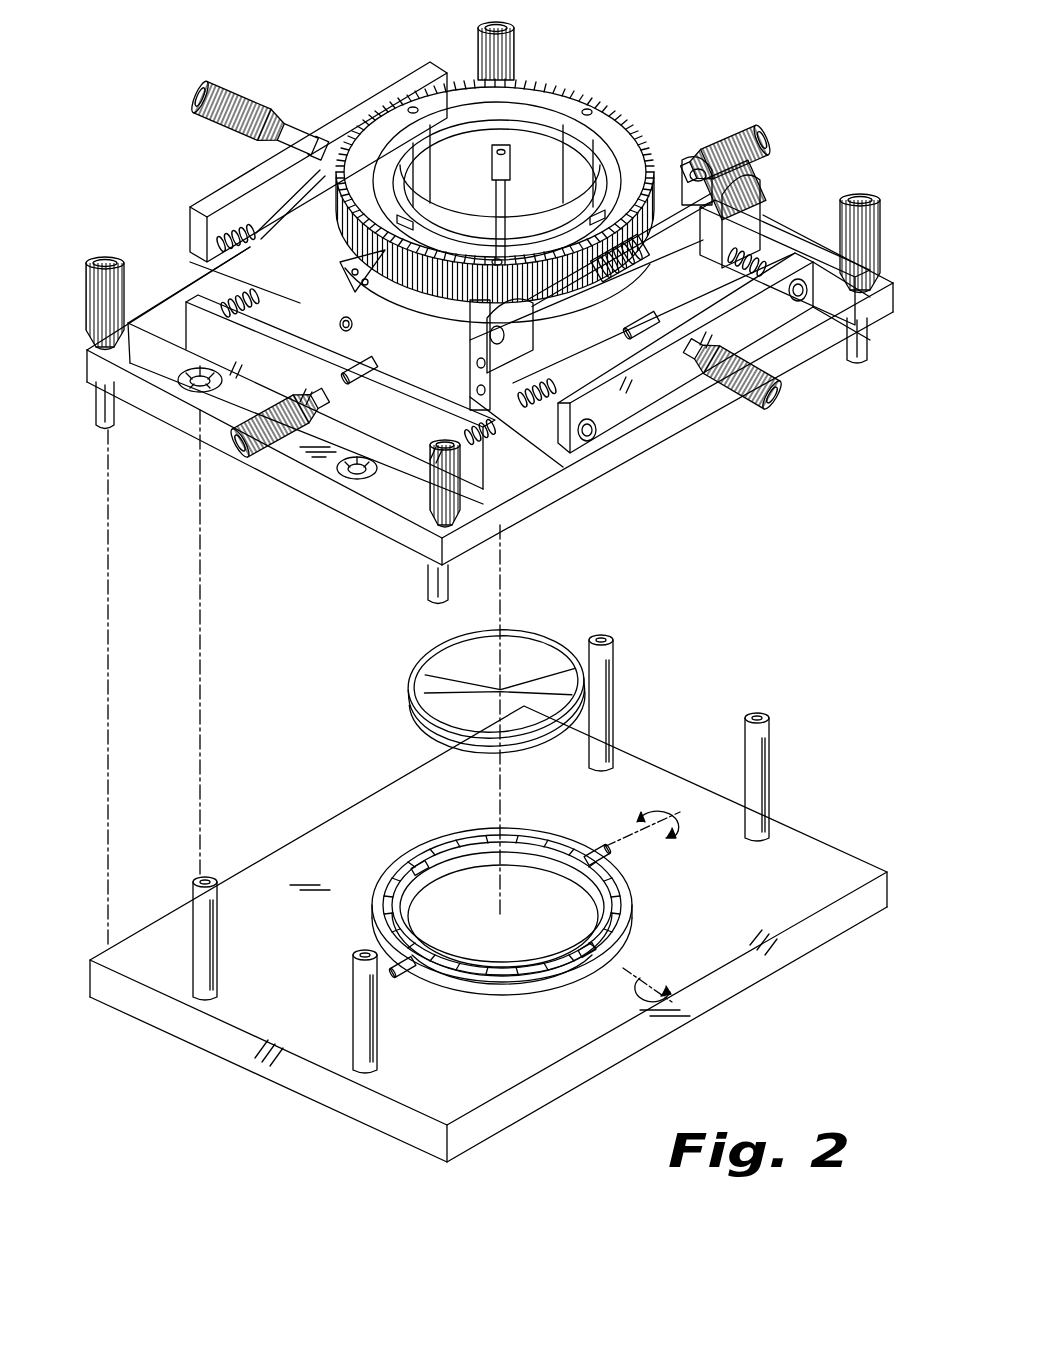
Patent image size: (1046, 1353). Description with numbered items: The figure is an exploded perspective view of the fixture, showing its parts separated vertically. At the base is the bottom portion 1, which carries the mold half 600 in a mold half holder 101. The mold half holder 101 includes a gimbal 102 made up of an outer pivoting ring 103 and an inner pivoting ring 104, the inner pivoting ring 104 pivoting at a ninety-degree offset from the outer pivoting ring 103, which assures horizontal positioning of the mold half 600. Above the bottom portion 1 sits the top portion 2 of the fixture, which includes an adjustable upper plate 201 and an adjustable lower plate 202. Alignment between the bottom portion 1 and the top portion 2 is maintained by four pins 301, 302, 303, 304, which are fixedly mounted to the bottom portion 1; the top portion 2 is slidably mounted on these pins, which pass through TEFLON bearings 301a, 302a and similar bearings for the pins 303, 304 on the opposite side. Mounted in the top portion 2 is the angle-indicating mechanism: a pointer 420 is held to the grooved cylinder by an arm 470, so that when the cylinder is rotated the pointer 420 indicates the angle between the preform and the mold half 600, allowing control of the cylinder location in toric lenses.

The bottom portion 1 is at (316, 820).
The top portion 2 is at (680, 442).
The mold half holder 101 is at (470, 814).
The gimbal 102 is at (530, 885).
The outer pivoting ring 103 is at (382, 884).
The inner pivoting ring 104 is at (470, 945).
The adjustable upper plate 201 is at (190, 247).
The adjustable lower plate 202 is at (523, 443).
The pin 301 is at (192, 973).
The TEFLON bearing 301a is at (178, 365).
The pin 302 is at (358, 1040).
The TEFLON bearing 302a is at (340, 478).
The pin 303 is at (768, 745).
The pin 304 is at (612, 655).
The pointer 420 is at (272, 248).
The arm 470 is at (415, 348).
The mold half 600 is at (407, 660).